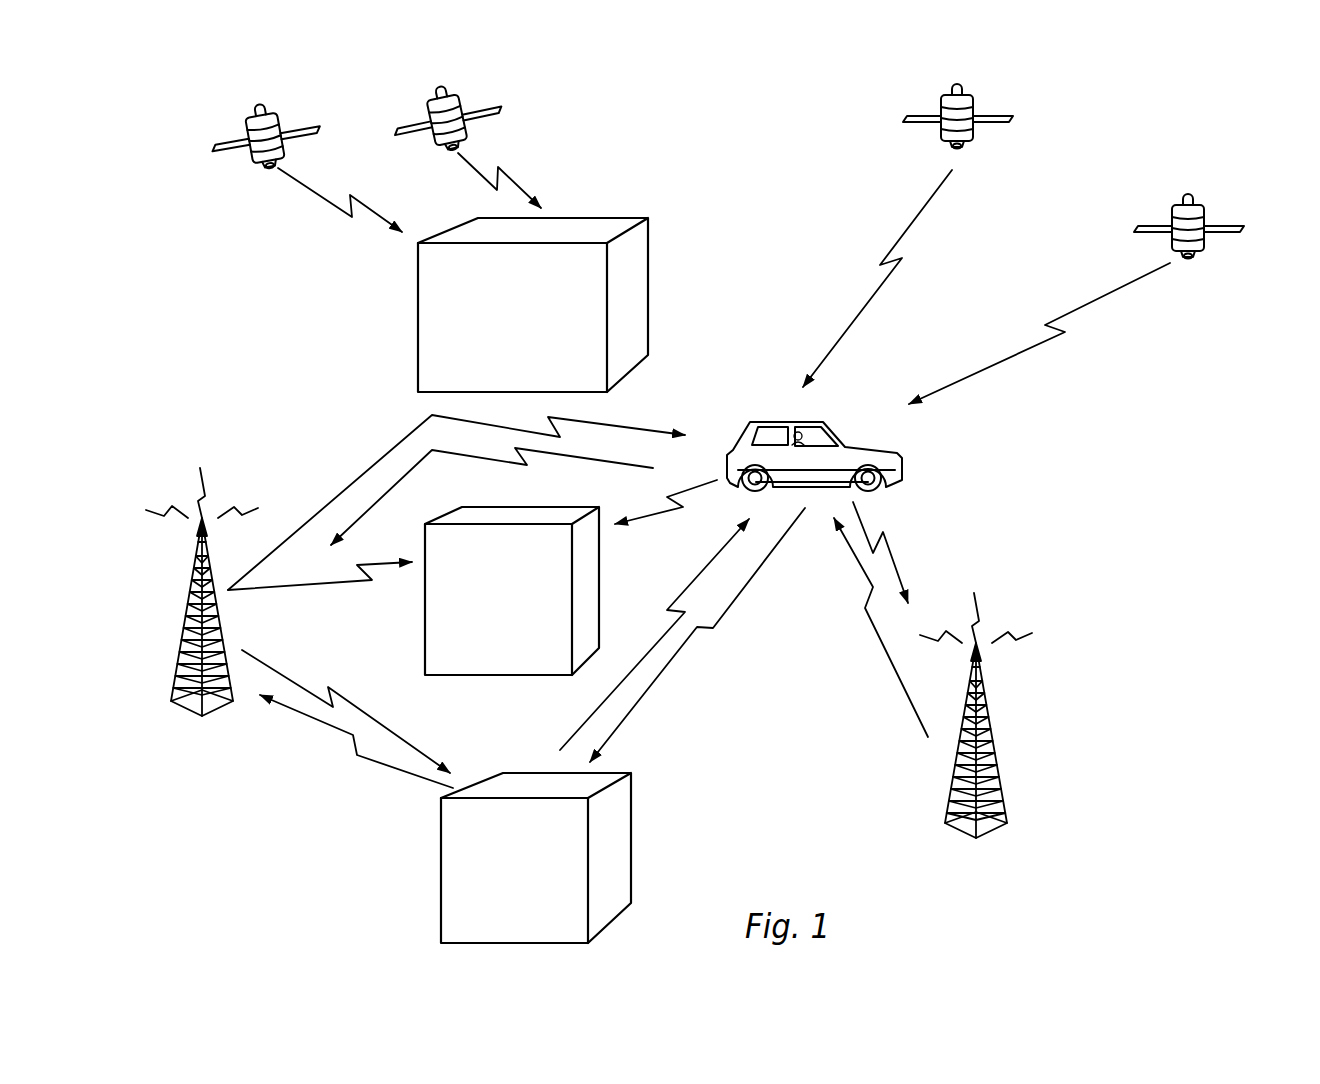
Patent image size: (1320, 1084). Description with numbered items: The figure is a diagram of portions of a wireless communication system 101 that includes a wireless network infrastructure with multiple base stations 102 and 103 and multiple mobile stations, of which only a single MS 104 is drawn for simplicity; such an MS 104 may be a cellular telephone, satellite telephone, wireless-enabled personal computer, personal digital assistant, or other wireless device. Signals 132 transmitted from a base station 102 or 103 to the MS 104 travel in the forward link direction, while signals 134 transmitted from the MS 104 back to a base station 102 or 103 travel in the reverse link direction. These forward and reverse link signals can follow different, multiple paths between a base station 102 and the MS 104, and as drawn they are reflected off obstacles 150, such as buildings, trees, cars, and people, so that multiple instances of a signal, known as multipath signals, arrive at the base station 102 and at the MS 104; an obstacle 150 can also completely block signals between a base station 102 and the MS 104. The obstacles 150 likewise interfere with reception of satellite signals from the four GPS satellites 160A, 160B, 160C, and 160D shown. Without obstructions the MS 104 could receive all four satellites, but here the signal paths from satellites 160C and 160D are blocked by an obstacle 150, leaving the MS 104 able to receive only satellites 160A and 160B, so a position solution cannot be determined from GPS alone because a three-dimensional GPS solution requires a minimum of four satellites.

The wireless communication system 101 is at (1135, 513).
The base station 102 is at (183, 602).
The base station 103 is at (951, 775).
The mobile station 104 is at (900, 458).
The forward link signals 132 is at (278, 583).
The reverse link signals 134 is at (406, 468).
The obstacle 150 is at (418, 318).
The GPS satellite 160A is at (1205, 210).
The GPS satellite 160B is at (973, 101).
The GPS satellite 160C is at (466, 105).
The GPS satellite 160D is at (282, 122).